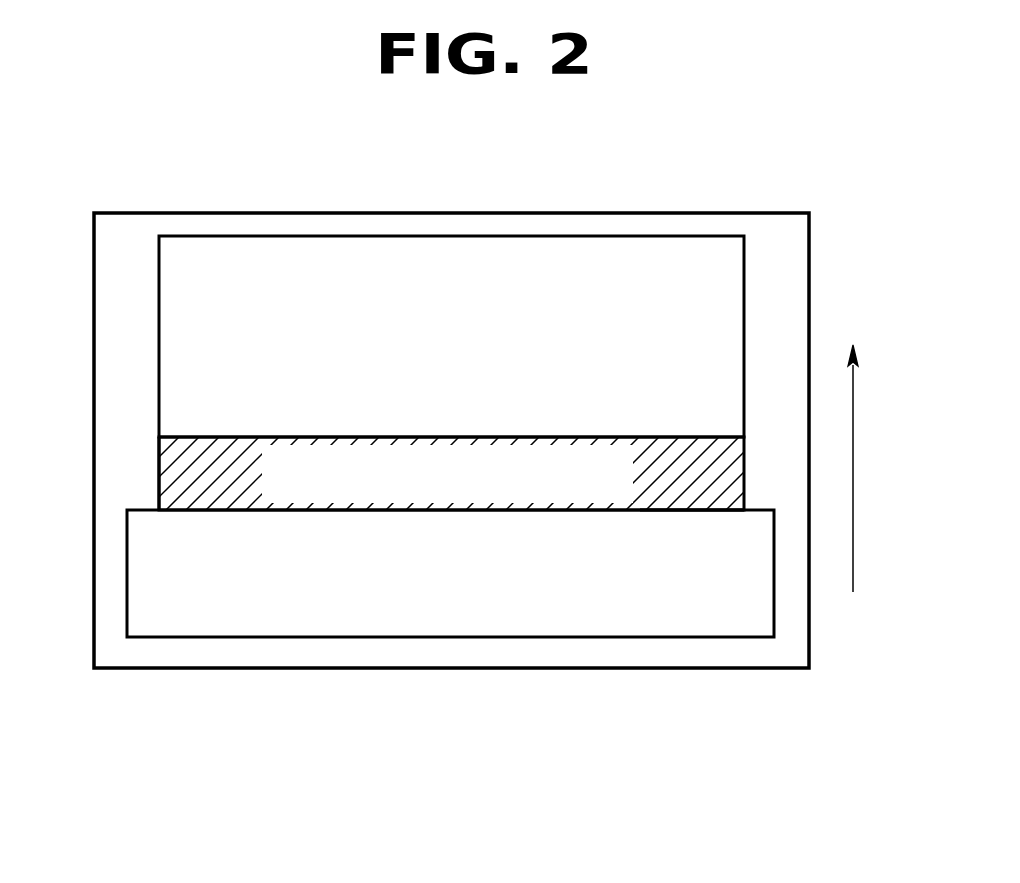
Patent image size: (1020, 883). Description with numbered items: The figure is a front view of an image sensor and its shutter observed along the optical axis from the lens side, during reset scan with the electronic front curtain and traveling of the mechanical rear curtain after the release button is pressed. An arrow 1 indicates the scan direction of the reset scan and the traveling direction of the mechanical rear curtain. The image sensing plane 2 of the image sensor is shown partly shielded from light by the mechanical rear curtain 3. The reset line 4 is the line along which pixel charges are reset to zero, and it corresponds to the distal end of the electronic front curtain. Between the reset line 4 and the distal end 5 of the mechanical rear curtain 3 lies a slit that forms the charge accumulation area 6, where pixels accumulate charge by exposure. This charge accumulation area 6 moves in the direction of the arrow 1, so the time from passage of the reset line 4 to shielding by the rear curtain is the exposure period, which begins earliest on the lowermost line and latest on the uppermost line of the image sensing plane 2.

The arrow 1 is at (853, 467).
The image sensing plane 2 is at (662, 272).
The mechanical rear curtain 3 is at (630, 617).
The reset line 4 is at (719, 437).
The distal end of the mechanical rear curtain 5 is at (657, 513).
The charge accumulation area 6 is at (160, 480).